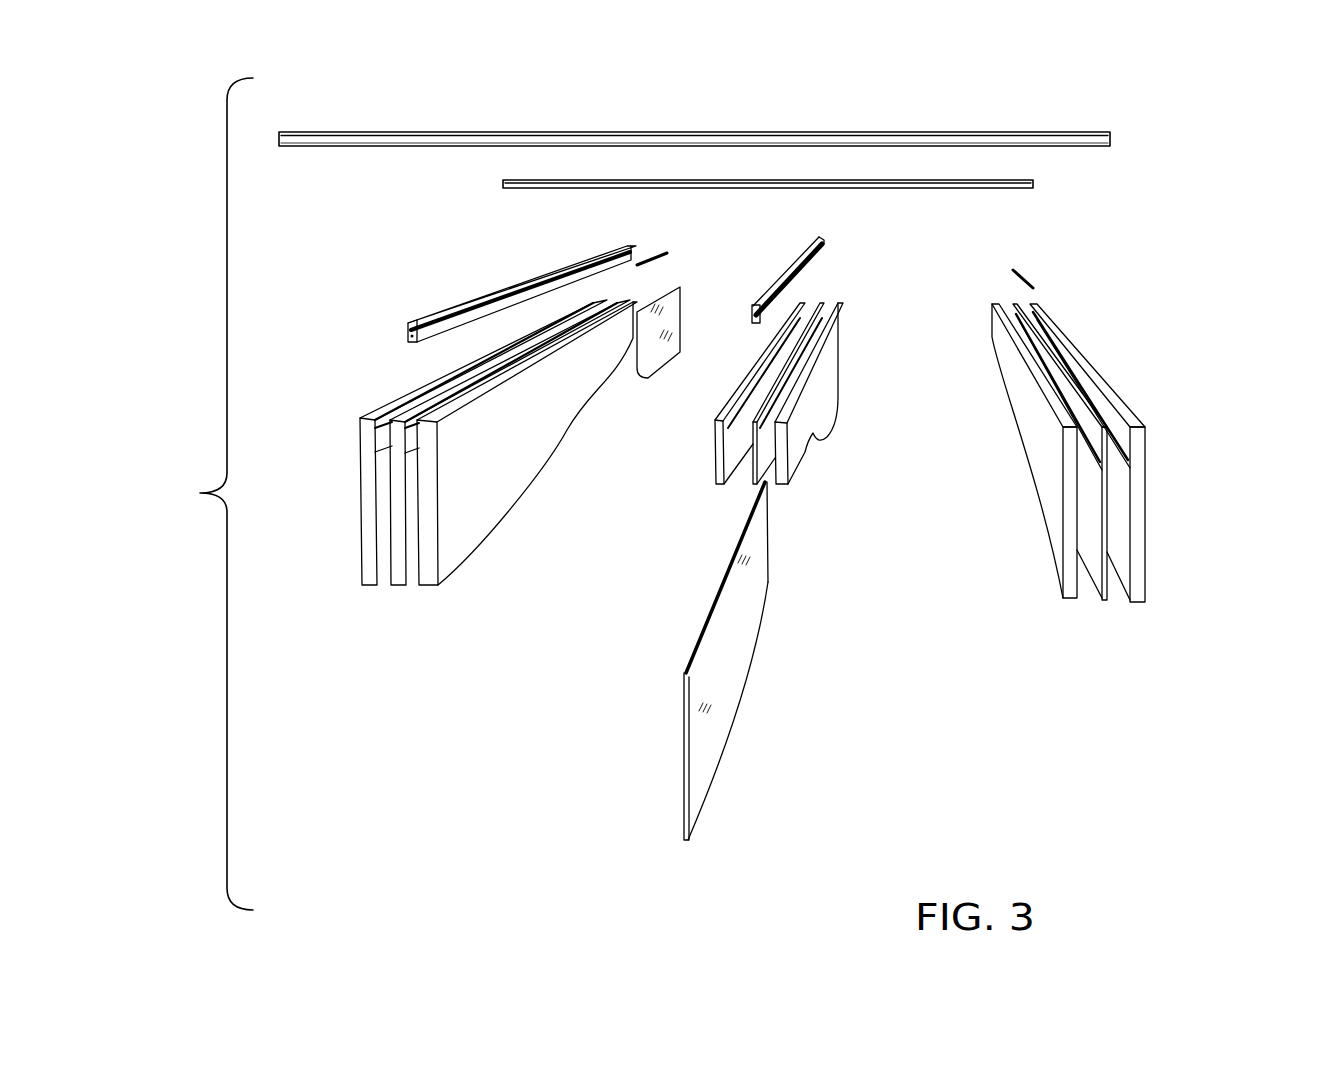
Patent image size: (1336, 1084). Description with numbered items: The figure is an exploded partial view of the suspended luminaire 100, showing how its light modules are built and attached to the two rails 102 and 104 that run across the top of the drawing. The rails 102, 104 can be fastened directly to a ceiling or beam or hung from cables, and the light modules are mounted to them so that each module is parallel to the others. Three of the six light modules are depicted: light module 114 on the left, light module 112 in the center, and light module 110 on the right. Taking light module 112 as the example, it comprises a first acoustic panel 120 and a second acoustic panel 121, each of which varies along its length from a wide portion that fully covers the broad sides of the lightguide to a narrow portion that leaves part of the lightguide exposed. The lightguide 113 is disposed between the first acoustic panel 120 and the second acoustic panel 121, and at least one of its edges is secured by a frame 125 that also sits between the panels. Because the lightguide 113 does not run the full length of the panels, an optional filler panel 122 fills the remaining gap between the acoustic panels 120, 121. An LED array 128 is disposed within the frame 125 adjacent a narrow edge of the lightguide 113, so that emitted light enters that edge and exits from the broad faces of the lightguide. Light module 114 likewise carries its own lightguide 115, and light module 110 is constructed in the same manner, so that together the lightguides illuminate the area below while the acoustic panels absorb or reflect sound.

The suspended luminaire 100 is at (198, 494).
The rail 102 is at (1013, 190).
The rail 104 is at (1048, 133).
The light module 110 is at (1126, 660).
The light module 112 is at (787, 510).
The lightguide 113 is at (697, 765).
The light module 114 is at (520, 515).
The lightguide 115 is at (643, 368).
The first acoustic panel 120 is at (825, 427).
The second acoustic panel 121 is at (716, 440).
The filler panel 122 is at (807, 313).
The frame 125 is at (765, 287).
The LED array 128 is at (648, 257).